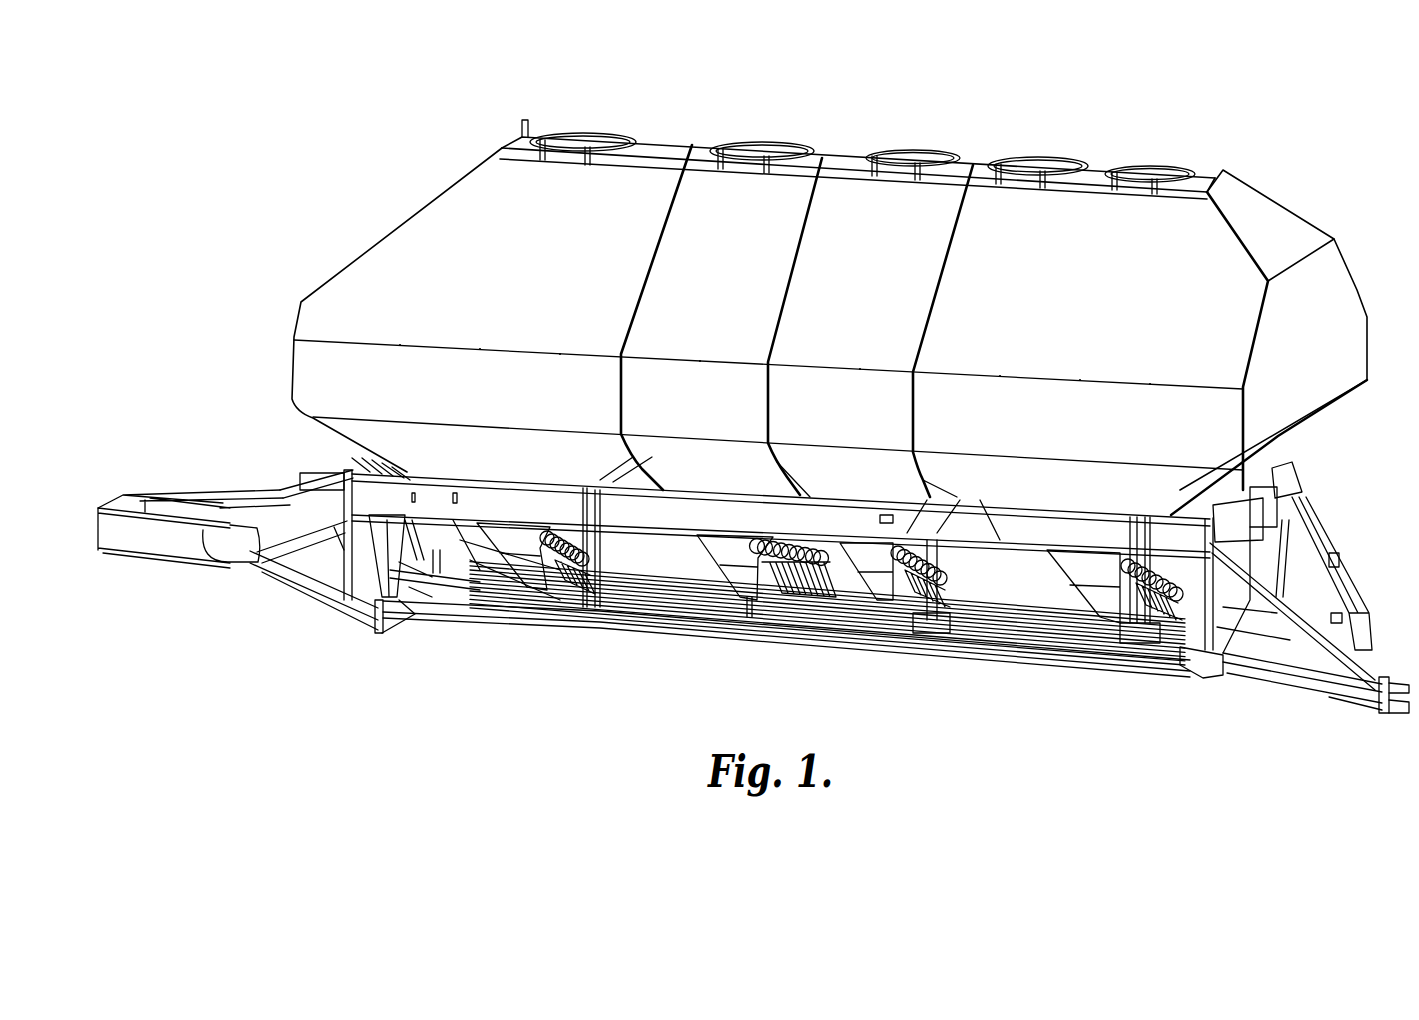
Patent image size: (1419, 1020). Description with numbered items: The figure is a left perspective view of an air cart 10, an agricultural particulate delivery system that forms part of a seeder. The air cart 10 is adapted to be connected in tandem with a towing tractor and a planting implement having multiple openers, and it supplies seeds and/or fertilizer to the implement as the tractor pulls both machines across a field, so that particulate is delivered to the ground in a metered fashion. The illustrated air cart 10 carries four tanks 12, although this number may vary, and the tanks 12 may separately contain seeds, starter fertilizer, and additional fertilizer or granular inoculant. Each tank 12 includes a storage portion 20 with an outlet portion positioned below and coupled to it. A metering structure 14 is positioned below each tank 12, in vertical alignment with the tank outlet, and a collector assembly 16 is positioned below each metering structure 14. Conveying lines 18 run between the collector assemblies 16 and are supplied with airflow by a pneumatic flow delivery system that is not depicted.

The air cart 10 is at (753, 393).
The tank 12 is at (516, 210).
The metering structure 14 is at (545, 595).
The collector assembly 16 is at (533, 600).
The conveying line 18 is at (497, 590).
The storage portion 20 is at (383, 434).